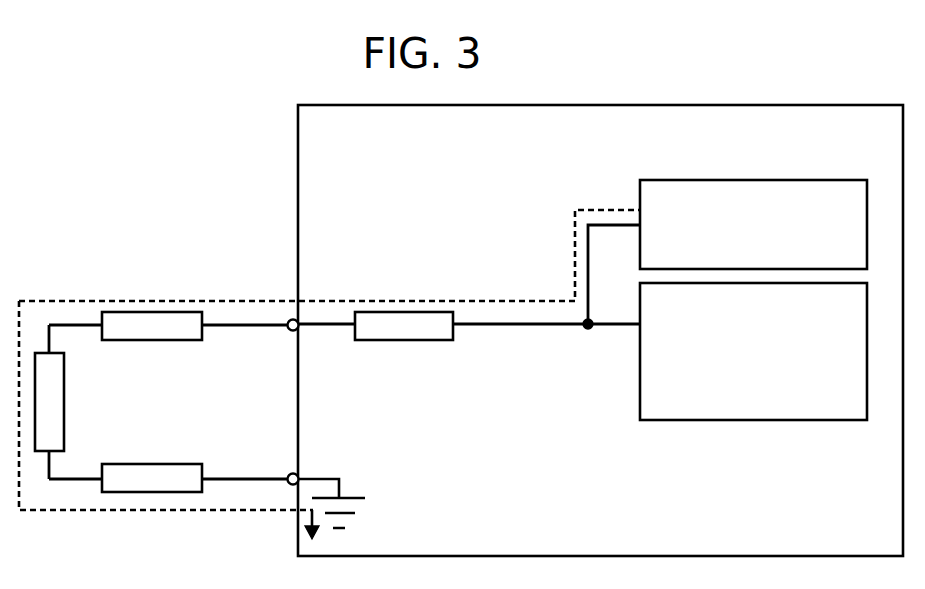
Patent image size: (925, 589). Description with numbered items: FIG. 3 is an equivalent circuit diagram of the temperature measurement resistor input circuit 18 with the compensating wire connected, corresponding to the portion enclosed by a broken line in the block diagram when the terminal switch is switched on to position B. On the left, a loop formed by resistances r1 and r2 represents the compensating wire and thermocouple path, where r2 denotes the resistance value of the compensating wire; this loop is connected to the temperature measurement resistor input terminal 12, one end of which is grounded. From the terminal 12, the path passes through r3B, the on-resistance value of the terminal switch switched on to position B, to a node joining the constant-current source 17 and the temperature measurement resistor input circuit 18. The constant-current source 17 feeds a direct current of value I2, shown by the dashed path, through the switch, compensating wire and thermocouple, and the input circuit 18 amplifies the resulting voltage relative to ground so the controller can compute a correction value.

The temperature measurement resistor input terminal 12 is at (289, 332).
The constant-current source 17 is at (640, 180).
The temperature measurement resistor input circuit 18 is at (640, 400).
The current value of the direct current I2 is at (510, 300).
The resistor r1 is at (64, 398).
The resistance value of the compensating wire r2 is at (143, 340).
The on-resistance value of the terminal switch r3B is at (404, 340).